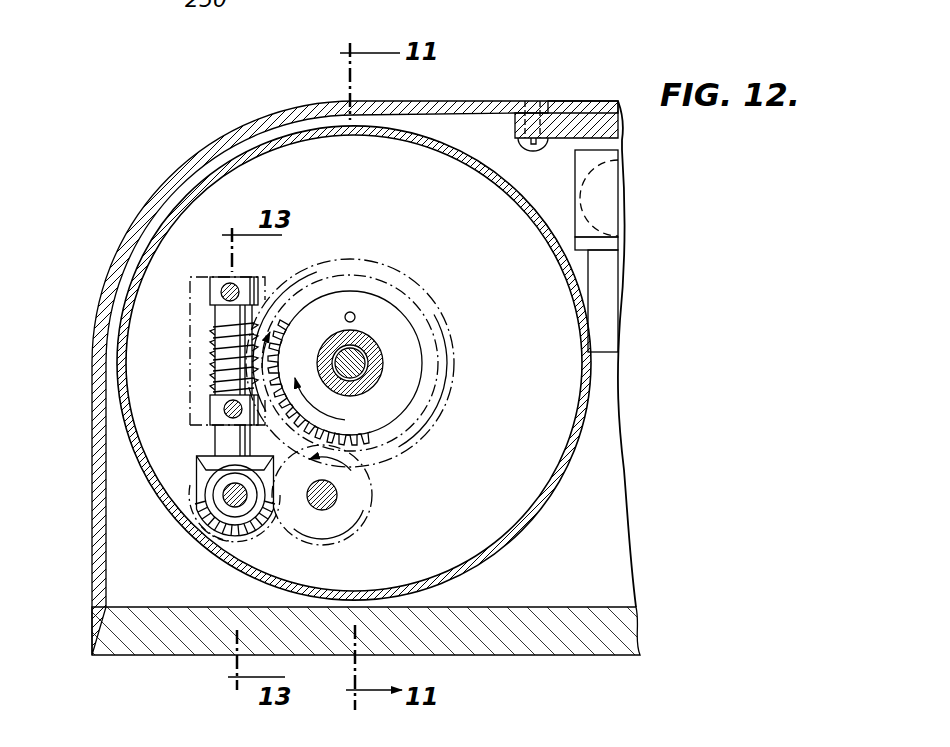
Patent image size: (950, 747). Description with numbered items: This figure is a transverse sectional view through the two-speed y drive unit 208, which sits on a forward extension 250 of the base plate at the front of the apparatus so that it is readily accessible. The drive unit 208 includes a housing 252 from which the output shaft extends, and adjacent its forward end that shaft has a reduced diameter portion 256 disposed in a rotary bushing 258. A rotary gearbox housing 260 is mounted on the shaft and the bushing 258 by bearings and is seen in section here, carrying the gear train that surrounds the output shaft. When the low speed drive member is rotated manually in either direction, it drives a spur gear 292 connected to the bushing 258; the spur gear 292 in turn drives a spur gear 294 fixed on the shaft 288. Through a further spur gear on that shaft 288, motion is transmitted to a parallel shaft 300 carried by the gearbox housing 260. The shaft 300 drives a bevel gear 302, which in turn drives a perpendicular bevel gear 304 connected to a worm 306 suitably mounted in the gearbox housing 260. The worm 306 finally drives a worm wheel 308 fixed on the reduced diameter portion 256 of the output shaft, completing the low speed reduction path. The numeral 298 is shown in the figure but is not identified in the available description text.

The forward extension 250 is at (538, 632).
The housing 252 is at (196, 136).
The two-speed y drive unit 208 is at (532, 78).
The rotary gearbox housing 260 is at (454, 142).
The rotary bushing 258 is at (373, 341).
The reduced diameter portion 256 is at (363, 362).
The spur gear 292 is at (345, 421).
The worm wheel 308 is at (270, 312).
The spur gear 294 is at (367, 476).
The shaft 288 is at (336, 506).
The worm 306 is at (215, 358).
The bevel gear 304 is at (197, 455).
The parallel shaft 300 is at (236, 498).
The bevel gear 302 is at (200, 504).
The bevel pinion 298 is at (240, 545).